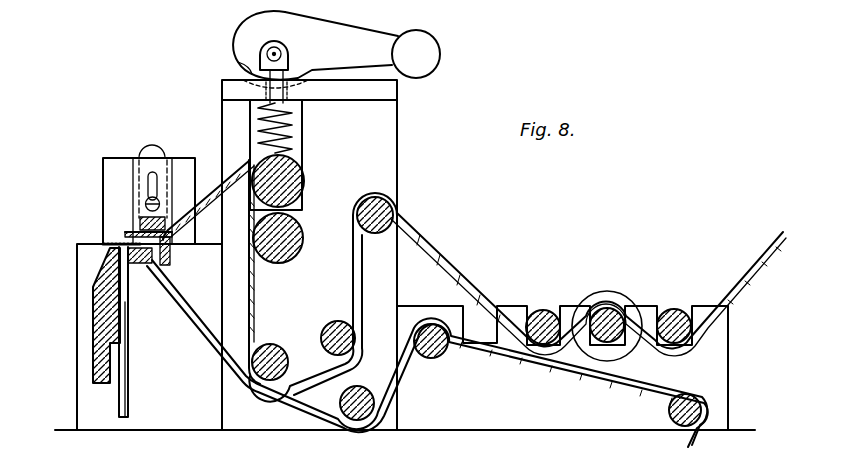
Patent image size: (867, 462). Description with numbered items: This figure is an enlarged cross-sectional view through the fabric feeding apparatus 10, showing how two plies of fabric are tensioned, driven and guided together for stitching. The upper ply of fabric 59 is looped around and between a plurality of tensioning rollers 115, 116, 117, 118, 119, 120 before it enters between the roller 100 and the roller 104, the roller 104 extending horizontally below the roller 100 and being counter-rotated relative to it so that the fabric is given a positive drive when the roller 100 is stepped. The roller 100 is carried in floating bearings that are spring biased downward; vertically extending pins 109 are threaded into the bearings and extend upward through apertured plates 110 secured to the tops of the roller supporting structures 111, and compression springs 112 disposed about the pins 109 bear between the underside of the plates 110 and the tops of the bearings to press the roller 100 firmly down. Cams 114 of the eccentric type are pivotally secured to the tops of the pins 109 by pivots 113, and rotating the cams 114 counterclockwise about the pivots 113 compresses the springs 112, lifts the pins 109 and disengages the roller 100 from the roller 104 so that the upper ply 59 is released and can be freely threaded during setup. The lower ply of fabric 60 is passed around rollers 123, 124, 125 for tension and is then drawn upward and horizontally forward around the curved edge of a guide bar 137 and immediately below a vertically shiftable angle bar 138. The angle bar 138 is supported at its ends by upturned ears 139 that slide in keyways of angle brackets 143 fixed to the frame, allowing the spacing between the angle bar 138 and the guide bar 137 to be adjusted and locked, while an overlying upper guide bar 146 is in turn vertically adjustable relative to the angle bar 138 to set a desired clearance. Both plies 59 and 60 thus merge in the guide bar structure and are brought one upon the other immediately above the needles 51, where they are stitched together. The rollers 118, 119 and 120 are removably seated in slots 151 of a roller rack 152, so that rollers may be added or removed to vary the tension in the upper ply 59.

The section line indicator 10 is at (72, 135).
The needles 51 is at (126, 376).
The upper ply of fabric 59 is at (213, 187).
The lower ply of fabric 60 is at (182, 297).
The roller 100 is at (303, 173).
The roller 104 is at (297, 246).
The pins 109 is at (246, 61).
The apertured plates 110 is at (377, 91).
The roller supporting structures 111 is at (382, 173).
The compression springs 112 is at (300, 129).
The pivots 113 is at (277, 51).
The cams 114 is at (372, 44).
The roller 115 is at (272, 355).
The roller 116 is at (329, 338).
The roller 117 is at (400, 210).
The roller 118 is at (543, 313).
The roller 119 is at (610, 317).
The roller 120 is at (673, 313).
The roller 123 is at (368, 393).
The roller 124 is at (436, 350).
The roller 125 is at (672, 411).
The guide bar 137 is at (142, 275).
The angle bar 138 is at (168, 256).
The upturned ears 139 is at (152, 153).
The angle brackets 143 is at (117, 173).
The upper guide bar 146 is at (134, 230).
The slots 151 is at (478, 318).
The roller rack 152 is at (717, 348).